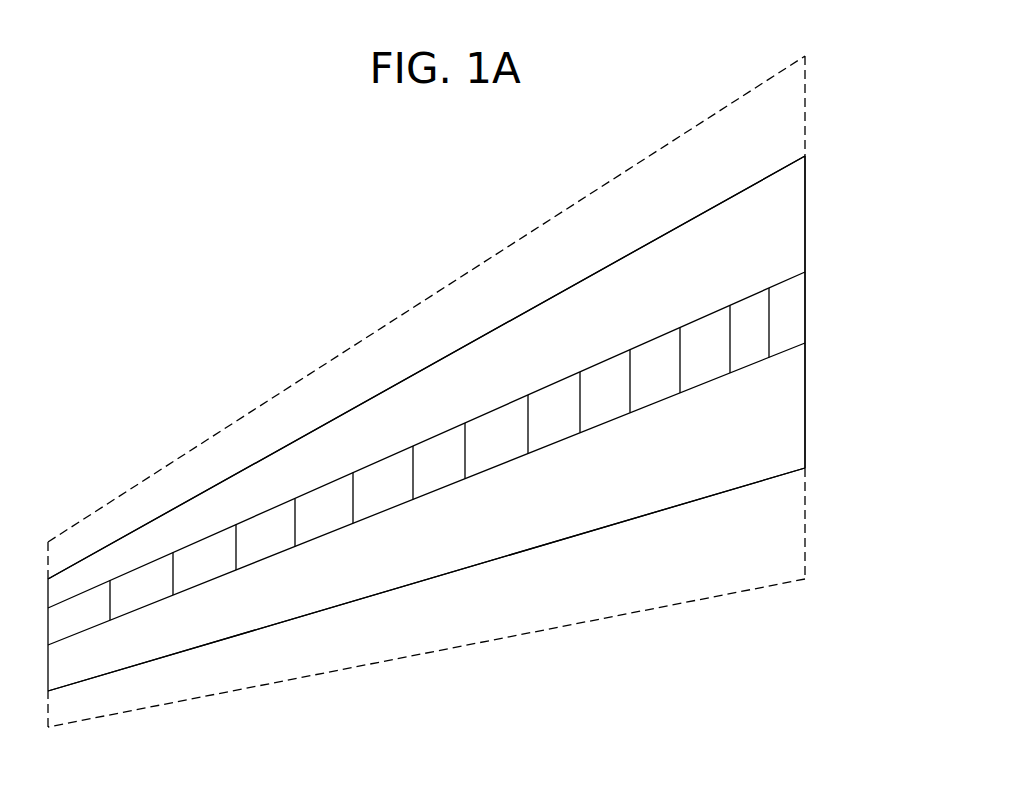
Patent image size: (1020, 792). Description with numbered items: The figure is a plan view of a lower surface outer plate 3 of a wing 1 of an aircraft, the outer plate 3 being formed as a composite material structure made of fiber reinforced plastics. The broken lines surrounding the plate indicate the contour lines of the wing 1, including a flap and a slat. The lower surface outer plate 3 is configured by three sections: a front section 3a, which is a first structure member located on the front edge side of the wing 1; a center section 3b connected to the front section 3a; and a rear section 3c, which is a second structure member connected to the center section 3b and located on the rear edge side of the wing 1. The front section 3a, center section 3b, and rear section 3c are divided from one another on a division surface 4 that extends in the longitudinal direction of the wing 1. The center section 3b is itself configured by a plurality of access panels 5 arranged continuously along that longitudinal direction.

The wing 1 is at (340, 268).
The lower surface outer plate 3 is at (708, 210).
The front section 3a is at (605, 285).
The center section 3b is at (812, 310).
The rear section 3c is at (516, 530).
The division surface 4 is at (497, 408).
The access panel 5 is at (430, 470).